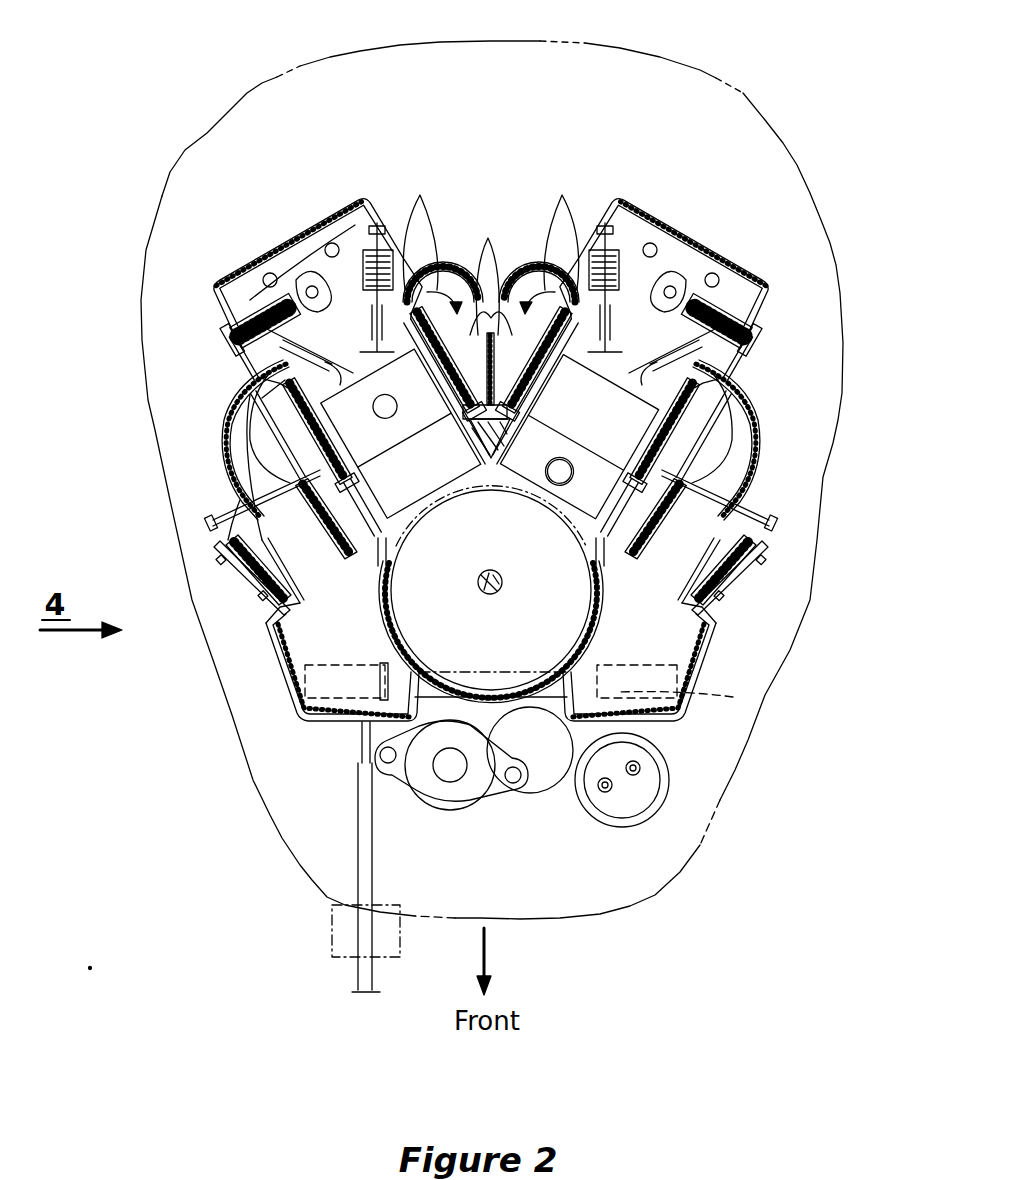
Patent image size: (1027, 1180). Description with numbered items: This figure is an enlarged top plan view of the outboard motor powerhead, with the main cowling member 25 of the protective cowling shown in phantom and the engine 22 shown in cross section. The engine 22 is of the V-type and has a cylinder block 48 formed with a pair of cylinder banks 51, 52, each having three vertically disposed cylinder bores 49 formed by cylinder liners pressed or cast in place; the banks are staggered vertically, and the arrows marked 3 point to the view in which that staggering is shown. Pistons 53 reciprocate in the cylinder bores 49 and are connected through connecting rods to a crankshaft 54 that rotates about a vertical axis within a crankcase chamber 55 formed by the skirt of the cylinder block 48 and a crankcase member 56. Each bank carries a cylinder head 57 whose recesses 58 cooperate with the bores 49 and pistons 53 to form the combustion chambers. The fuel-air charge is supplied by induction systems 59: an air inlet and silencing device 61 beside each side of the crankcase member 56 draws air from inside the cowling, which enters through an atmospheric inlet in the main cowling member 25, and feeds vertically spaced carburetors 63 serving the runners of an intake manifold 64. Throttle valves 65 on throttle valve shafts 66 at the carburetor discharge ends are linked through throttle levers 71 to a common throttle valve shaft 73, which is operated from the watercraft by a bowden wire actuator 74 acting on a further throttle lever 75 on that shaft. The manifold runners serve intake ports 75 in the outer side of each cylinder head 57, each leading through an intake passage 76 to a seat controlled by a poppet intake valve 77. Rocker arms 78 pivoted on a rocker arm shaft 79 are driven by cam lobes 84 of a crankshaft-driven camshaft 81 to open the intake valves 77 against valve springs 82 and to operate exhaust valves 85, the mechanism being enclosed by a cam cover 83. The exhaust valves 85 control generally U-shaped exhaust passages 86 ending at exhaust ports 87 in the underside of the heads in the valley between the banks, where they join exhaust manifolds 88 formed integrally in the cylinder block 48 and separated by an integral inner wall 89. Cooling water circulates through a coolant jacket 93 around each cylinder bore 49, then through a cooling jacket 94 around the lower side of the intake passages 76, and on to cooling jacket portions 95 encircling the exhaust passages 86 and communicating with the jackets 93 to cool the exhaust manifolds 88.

The cylinder head bolt 3 is at (337, 500).
The engine 22 is at (168, 368).
The main cowling member 25 is at (676, 65).
The cylinder block 48 is at (262, 398).
The cylinder bores 49 is at (556, 513).
The cylinder bank 51 is at (188, 236).
The cylinder bank 52 is at (748, 260).
The pistons 53 is at (395, 450).
The crankshaft 54 is at (491, 571).
The crankcase chamber 55 is at (575, 650).
The crankcase member 56 is at (606, 642).
The cylinder head 57 is at (410, 225).
The recesses 58 is at (361, 388).
The induction system 59 is at (195, 557).
The air inlet and silencing device 61 is at (290, 700).
The carburetors 63 is at (235, 585).
The intake manifold 64 is at (220, 465).
The throttle valves 65 is at (290, 482).
The throttle valve shafts 66 is at (228, 505).
The throttle levers 71 is at (733, 697).
The throttle valve shaft 73 is at (677, 720).
The bowden wire actuator 74 is at (369, 889).
The intake port 75 is at (245, 385).
The intake passage 76 is at (240, 352).
The intake valve 77 is at (847, 380).
The rocker arms 78 is at (310, 272).
The rocker arm shaft 79 is at (341, 215).
The camshaft 81 is at (317, 215).
The valve springs 82 is at (226, 314).
The cam cover 83 is at (168, 290).
The cam lobes 84 is at (232, 292).
The exhaust valves 85 is at (367, 236).
The exhaust passages 86 is at (459, 278).
The exhaust ports 87 is at (506, 240).
The exhaust manifolds 88 is at (490, 275).
The inner wall 89 is at (542, 469).
The coolant jacket 93 is at (298, 392).
The cooling jacket 94 is at (262, 392).
The cooling jacket portions 95 is at (437, 260).